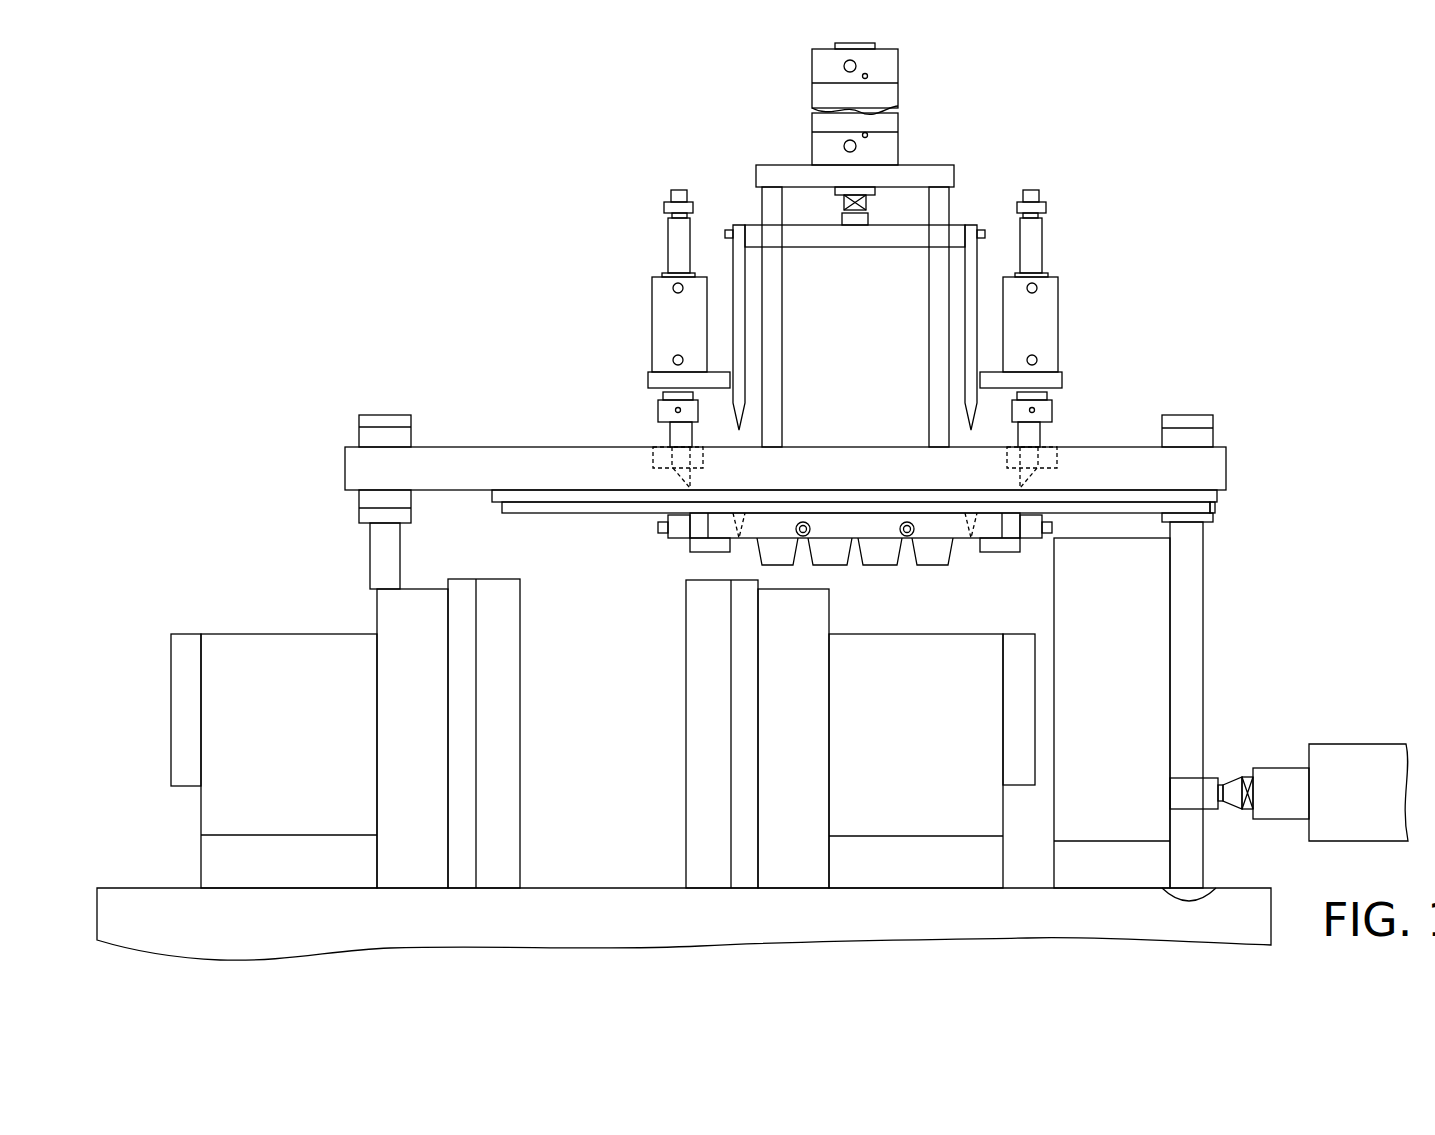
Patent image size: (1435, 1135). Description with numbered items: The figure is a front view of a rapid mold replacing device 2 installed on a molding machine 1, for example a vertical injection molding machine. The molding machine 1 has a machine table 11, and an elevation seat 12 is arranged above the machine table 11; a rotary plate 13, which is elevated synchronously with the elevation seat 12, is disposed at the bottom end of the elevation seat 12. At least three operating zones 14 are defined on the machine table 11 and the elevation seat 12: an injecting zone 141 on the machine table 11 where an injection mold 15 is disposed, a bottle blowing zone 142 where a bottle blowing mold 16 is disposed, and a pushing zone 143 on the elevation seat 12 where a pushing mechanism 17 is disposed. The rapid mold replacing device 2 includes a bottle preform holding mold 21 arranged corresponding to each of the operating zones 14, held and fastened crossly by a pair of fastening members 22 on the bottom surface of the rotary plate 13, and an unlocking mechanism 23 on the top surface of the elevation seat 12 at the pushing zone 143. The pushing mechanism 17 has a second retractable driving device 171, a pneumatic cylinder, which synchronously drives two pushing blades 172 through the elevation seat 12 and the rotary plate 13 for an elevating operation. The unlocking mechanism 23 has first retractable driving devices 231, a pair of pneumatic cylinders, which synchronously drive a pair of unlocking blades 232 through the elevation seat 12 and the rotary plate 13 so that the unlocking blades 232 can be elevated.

The molding machine 1 is at (1310, 556).
The machine table 11 is at (782, 931).
The elevation seat 12 is at (1213, 462).
The rotary plate 13 is at (1183, 503).
The operating zones 14 is at (553, 408).
The injecting zone 141 is at (1216, 888).
The bottle blowing zone 142 is at (607, 708).
The pushing zone 143 is at (845, 415).
The injection mold 15 is at (1143, 655).
The bottle blowing mold 16 is at (702, 747).
The pushing mechanism 17 is at (923, 165).
The second retractable driving device 171 is at (825, 95).
The pushing blades 172 is at (967, 410).
The rapid mold replacing device 2 is at (659, 573).
The bottle preform holding mold 21 is at (872, 532).
The fastening members 22 is at (677, 523).
The unlocking mechanism 23 is at (652, 290).
The first retractable driving device 231 is at (1048, 316).
The unlocking blades 232 is at (1033, 478).